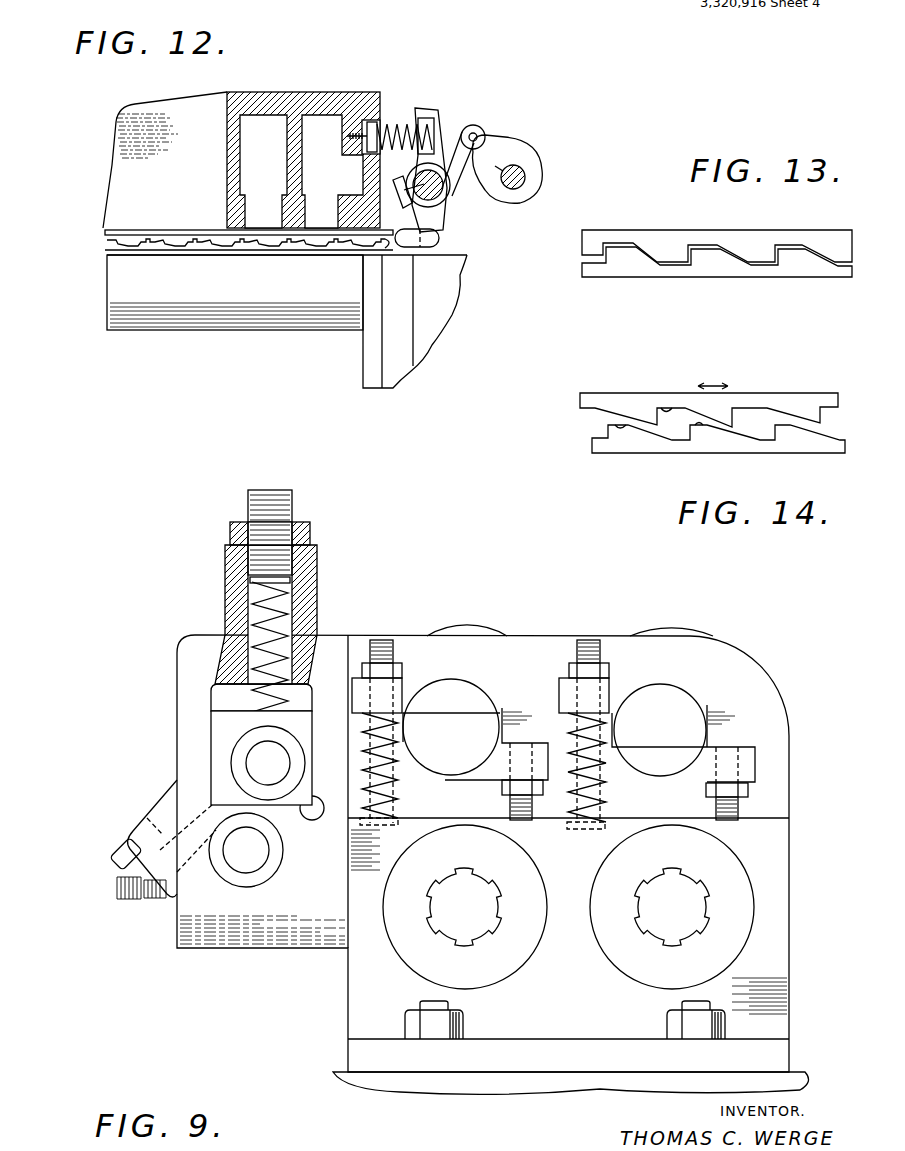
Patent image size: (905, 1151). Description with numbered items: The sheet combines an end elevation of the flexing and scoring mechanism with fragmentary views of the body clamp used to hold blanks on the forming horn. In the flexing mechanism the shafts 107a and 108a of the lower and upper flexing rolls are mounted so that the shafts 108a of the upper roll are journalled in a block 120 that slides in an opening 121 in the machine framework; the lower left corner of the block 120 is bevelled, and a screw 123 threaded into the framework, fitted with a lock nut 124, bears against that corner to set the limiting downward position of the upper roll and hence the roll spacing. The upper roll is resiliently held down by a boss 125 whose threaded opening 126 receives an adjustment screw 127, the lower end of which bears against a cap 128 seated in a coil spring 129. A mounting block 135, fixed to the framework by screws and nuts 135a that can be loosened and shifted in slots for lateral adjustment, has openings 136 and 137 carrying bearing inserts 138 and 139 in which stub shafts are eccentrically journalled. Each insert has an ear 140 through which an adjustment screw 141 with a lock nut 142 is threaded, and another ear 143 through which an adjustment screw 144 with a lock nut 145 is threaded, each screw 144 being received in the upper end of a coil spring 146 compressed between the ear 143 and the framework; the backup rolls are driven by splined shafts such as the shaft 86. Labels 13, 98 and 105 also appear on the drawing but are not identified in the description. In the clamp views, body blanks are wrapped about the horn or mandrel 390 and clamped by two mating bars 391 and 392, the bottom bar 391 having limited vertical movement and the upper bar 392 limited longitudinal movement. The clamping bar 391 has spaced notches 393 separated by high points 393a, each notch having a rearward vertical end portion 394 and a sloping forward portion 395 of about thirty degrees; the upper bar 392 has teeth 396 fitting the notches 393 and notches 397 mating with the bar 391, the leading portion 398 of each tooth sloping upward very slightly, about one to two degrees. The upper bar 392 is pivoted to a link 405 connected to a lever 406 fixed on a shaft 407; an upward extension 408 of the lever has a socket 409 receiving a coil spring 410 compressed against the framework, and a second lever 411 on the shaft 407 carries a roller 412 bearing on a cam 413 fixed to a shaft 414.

In FIG. 9, the cylinder assembly 13 is at (442, 598).
In FIG. 9, the splined shaft 86 is at (445, 907).
In FIG. 9, the boss 98 is at (472, 630).
In FIG. 9, the boss 105 is at (680, 630).
In FIG. 9, the shaft 107a is at (252, 862).
In FIG. 9, the shaft 108a is at (262, 762).
In FIG. 9, the block 120 is at (220, 726).
In FIG. 9, the opening 121 is at (215, 698).
In FIG. 9, the screw 123 is at (145, 810).
In FIG. 9, the lock nut 124 is at (122, 855).
In FIG. 9, the boss 125 is at (310, 560).
In FIG. 9, the threaded opening 126 is at (255, 552).
In FIG. 9, the adjustment screw 127 is at (252, 503).
In FIG. 9, the cap 128 is at (262, 583).
In FIG. 9, the coil spring 129 is at (260, 610).
In FIG. 9, the mounting block 135 is at (740, 660).
In FIG. 9, the screws and nuts 135a is at (463, 1020).
In FIG. 9, the opening 136 is at (430, 757).
In FIG. 9, the opening 137 is at (625, 755).
In FIG. 9, the bearing insert 138 is at (470, 692).
In FIG. 9, the bearing insert 139 is at (678, 700).
In FIG. 9, the ear 140 is at (555, 737).
In FIG. 9, the adjustment screw 141 is at (510, 810).
In FIG. 9, the lock nut 142 is at (502, 789).
In FIG. 9, the ear 143 is at (360, 690).
In FIG. 9, the adjustment screw 144 is at (383, 640).
In FIG. 9, the lock nut 145 is at (405, 668).
In FIG. 9, the coil spring 146 is at (370, 780).
In FIG. 12, the horn or mandrel 390 is at (277, 286).
In FIG. 12, the bottom clamping bar 391 is at (130, 256).
In FIG. 13, the bottom clamping bar 391 is at (625, 279).
In FIG. 14, the bottom clamping bar 391 is at (625, 458).
In FIG. 12, the upper bar 392 is at (162, 226).
In FIG. 13, the upper bar 392 is at (644, 222).
In FIG. 14, the upper bar 392 is at (619, 386).
In FIG. 12, the notches 393 is at (190, 246).
In FIG. 13, the notches 393 is at (680, 266).
In FIG. 14, the notches 393 is at (672, 440).
In FIG. 12, the high points 393a is at (278, 244).
In FIG. 13, the high points 393a is at (800, 250).
In FIG. 14, the high points 393a is at (700, 427).
In FIG. 13, the rearward vertical end portion 394 is at (686, 249).
In FIG. 14, the rearward vertical end portion 394 is at (773, 440).
In FIG. 12, the sloping forward portion 395 is at (160, 240).
In FIG. 13, the sloping forward portion 395 is at (725, 250).
In FIG. 14, the sloping forward portion 395 is at (740, 425).
In FIG. 12, the teeth 396 is at (330, 246).
In FIG. 13, the teeth 396 is at (755, 263).
In FIG. 14, the teeth 396 is at (630, 417).
In FIG. 13, the notches 397 is at (690, 246).
In FIG. 14, the notches 397 is at (667, 408).
In FIG. 14, the leading portion of tooth 398 is at (620, 427).
In FIG. 12, the link 405 is at (418, 246).
In FIG. 12, the lever 406 is at (442, 222).
In FIG. 12, the shaft 407 is at (442, 190).
In FIG. 12, the upward extension 408 is at (440, 110).
In FIG. 12, the socket 409 is at (428, 116).
In FIG. 12, the coil spring 410 is at (400, 120).
In FIG. 12, the lever 411 is at (450, 135).
In FIG. 12, the roller 412 is at (485, 128).
In FIG. 12, the cam 413 is at (508, 148).
In FIG. 12, the shaft 414 is at (524, 172).